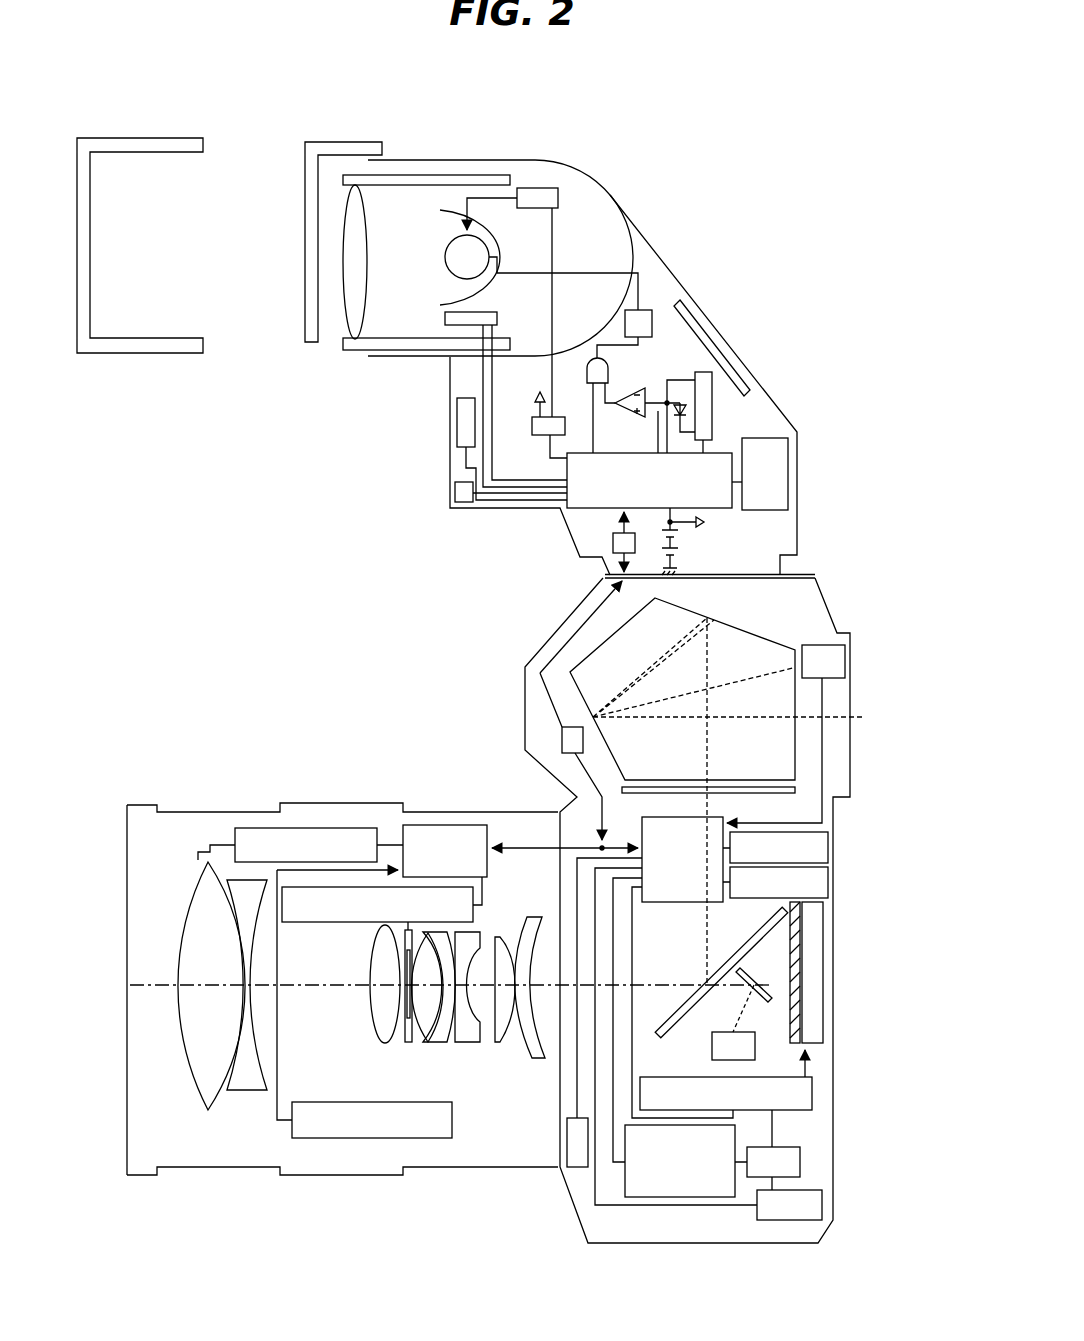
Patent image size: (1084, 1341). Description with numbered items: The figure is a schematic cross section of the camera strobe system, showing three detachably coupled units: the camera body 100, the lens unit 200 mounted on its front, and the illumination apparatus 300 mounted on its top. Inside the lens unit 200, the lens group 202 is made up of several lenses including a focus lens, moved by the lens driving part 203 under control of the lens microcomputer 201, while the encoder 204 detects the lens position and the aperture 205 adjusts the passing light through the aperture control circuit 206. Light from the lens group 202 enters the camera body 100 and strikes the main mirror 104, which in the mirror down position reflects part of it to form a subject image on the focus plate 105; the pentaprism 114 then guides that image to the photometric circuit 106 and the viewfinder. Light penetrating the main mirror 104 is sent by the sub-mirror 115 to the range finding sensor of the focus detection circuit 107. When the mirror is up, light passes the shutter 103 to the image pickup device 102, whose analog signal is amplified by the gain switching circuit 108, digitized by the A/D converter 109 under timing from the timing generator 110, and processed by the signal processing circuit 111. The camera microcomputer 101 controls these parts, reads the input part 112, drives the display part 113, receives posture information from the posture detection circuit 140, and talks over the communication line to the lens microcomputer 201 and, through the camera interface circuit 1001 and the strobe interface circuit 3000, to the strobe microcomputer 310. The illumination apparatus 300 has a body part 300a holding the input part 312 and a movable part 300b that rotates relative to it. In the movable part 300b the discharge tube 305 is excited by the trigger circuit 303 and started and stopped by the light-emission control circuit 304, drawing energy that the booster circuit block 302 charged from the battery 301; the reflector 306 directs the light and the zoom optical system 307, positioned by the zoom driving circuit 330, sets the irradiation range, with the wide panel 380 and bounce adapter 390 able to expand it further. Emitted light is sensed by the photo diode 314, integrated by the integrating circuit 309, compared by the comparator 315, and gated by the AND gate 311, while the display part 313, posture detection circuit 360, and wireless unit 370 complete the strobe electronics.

The camera body 100 is at (872, 626).
The camera microcomputer 101 is at (677, 902).
The image pickup device 102 is at (815, 1000).
The shutter 103 is at (800, 937).
The main mirror 104 is at (790, 915).
The focus plate 105 is at (797, 790).
The photometric circuit 106 is at (845, 660).
The focus detection circuit 107 is at (707, 1043).
The gain switching circuit 108 is at (812, 1090).
The A/D converter 109 is at (800, 1160).
The timing generator 110 is at (822, 1200).
The signal processing circuit 111 is at (688, 1197).
The input part 112 is at (828, 882).
The display part 113 is at (828, 848).
The pentaprism 114 is at (590, 653).
The sub-mirror 115 is at (797, 968).
The posture detection circuit 140 is at (577, 1167).
The camera interface circuit 1001 is at (562, 740).
The lens unit 200 is at (203, 798).
The lens microcomputer 201 is at (440, 825).
The lens group 202 is at (200, 970).
The lens driving part 203 is at (258, 828).
The encoder 204 is at (452, 1120).
The aperture 205 is at (408, 1042).
The aperture control circuit 206 is at (358, 922).
The illumination apparatus 300 is at (722, 197).
The body part 300a is at (797, 470).
The movable part 300b is at (537, 158).
The battery 301 is at (680, 548).
The booster circuit block 302 is at (534, 436).
The trigger circuit 303 is at (558, 195).
The light-emission control circuit 304 is at (652, 312).
The discharge tube 305 is at (447, 245).
The reflector 306 is at (458, 205).
The zoom optical system 307 is at (345, 325).
The integrating circuit 309 is at (712, 423).
The strobe microcomputer 310 is at (735, 510).
The AND gate 311 is at (608, 372).
The input part 312 is at (788, 450).
The display part 313 is at (722, 348).
The photo diode 314 is at (670, 392).
The comparator 315 is at (628, 412).
The zoom driving circuit 330 is at (445, 318).
The posture detection circuit 360 is at (455, 493).
The wireless unit 370 is at (457, 420).
The wide panel 380 is at (305, 238).
The bounce adapter 390 is at (134, 137).
The strobe interface circuit 3000 is at (613, 543).